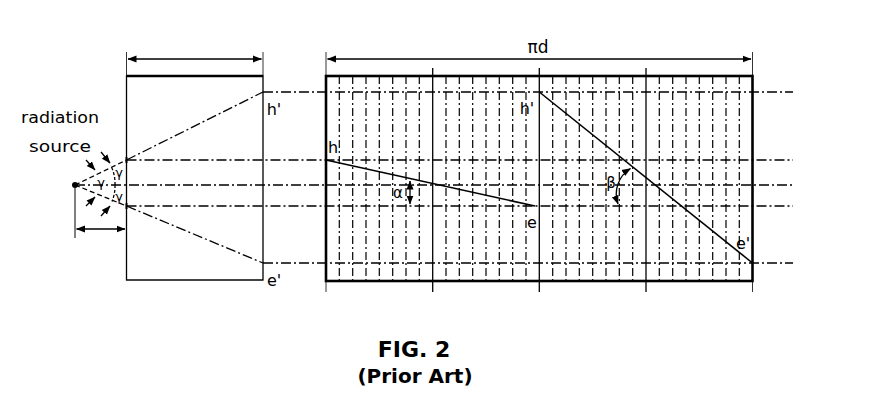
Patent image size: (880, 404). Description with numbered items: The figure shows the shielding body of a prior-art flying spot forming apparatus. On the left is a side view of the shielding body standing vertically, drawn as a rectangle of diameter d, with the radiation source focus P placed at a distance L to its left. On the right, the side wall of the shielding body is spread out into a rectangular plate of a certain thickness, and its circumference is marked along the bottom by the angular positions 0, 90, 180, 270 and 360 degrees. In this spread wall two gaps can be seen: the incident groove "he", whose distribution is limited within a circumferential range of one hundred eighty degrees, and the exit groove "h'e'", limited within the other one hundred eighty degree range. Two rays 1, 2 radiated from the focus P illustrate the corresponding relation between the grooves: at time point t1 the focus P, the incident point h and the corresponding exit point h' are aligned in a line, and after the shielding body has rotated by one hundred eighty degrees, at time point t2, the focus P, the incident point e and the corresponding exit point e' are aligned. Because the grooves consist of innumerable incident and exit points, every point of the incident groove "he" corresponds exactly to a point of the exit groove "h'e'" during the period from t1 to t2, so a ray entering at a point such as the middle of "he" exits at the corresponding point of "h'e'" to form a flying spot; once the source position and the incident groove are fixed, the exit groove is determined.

The first beam 1 is at (169, 138).
The second beam 2 is at (169, 224).
The radiation source focus P is at (65, 186).
The incident point h is at (118, 150).
The incident point e is at (119, 209).
The object diameter d is at (195, 57).
The source distance L is at (100, 213).
The time point t1 is at (195, 97).
The time point t2 is at (195, 262).
The 0 degree position 0 is at (326, 187).
The 90 degree position 90 is at (433, 195).
The 180 degree position 180 is at (540, 195).
The 270 degree position 270 is at (646, 195).
The 360 degree position 360 is at (763, 187).